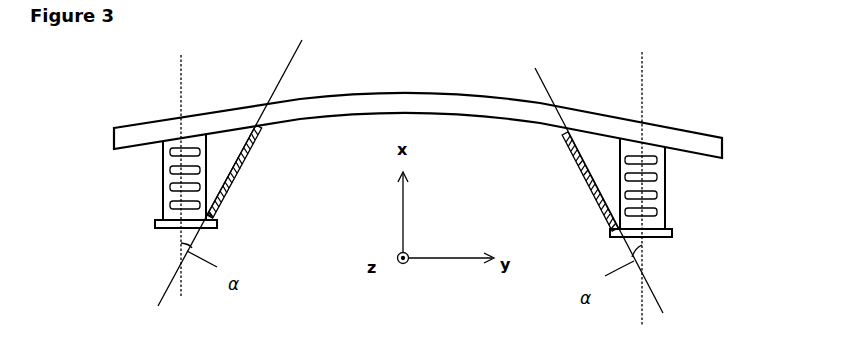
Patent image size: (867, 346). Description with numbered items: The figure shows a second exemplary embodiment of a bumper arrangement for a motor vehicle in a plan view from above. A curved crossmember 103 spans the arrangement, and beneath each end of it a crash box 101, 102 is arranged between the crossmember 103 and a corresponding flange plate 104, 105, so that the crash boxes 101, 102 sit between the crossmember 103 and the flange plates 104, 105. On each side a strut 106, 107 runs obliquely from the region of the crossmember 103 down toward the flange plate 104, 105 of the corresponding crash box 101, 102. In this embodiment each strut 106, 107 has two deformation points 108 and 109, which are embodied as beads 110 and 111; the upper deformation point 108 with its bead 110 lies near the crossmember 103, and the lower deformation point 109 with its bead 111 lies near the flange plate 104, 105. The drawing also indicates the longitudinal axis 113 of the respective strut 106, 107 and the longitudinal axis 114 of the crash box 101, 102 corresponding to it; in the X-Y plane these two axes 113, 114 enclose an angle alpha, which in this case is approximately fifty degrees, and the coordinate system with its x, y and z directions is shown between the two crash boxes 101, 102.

The crash box 101 is at (667, 186).
The crash box 102 is at (163, 175).
The crossmember 103 is at (396, 100).
The flange plate 104 is at (672, 233).
The flange plate 105 is at (167, 229).
The strut 106 is at (580, 157).
The strut 107 is at (273, 180).
The deformation point 108 is at (244, 153).
The deformation point 109 is at (218, 207).
The bead 110 is at (228, 182).
The bead 111 is at (209, 215).
The longitudinal axis of the strut 113 is at (180, 72).
The longitudinal axis of the crash box 114 is at (292, 63).